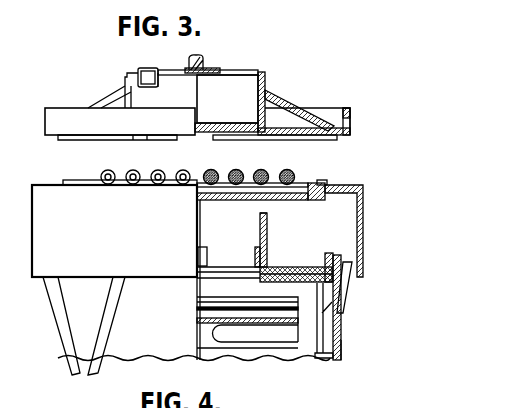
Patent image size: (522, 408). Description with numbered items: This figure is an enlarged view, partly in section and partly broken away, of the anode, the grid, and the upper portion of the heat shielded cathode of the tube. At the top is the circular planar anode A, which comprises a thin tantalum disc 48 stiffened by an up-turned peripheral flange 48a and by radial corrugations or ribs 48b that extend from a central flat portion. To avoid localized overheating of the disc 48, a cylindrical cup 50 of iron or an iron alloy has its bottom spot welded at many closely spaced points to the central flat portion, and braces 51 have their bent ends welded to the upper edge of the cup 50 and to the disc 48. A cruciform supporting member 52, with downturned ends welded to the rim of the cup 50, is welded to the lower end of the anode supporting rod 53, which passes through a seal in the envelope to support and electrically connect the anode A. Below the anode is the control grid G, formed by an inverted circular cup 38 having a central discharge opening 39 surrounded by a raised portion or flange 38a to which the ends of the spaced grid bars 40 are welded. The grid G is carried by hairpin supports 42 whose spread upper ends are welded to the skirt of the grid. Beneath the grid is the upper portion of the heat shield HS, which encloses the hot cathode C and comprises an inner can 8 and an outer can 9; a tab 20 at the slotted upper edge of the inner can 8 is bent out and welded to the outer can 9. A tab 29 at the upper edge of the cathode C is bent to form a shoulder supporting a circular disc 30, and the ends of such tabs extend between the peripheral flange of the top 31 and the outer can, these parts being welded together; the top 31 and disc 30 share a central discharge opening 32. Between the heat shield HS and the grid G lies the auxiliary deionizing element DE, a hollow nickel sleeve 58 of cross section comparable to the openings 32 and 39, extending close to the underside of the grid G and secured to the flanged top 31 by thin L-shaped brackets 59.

The anode A is at (67, 117).
The cruciform supporting member 52 is at (146, 70).
The anode supporting rod 53 is at (200, 65).
The cylindrical cup 50 is at (251, 80).
The braces 51 is at (281, 100).
The disc 48 is at (332, 112).
The up-turned peripheral flange 48a is at (382, 123).
The radial corrugations or ribs 48b is at (382, 146).
The control grid G is at (37, 238).
The grid bars 40 is at (228, 171).
The central discharge opening 39 is at (230, 199).
The inverted circular cup 38 is at (363, 209).
The raised portion or flange 38a is at (369, 178).
The sleeve 58 is at (267, 230).
The auxiliary deionizing element DE is at (268, 222).
The L-shaped brackets 59 is at (255, 252).
The central discharge opening 32 is at (260, 278).
The top 31 is at (308, 266).
The circular disc 30 is at (268, 278).
The tab 29 is at (286, 282).
The tab 20 is at (198, 298).
The hot cathode C is at (262, 338).
The outer heat shield can 9 is at (342, 326).
The heat shield HS is at (343, 348).
The inner heat shield can 8 is at (325, 358).
The hairpin supports 42 is at (88, 378).